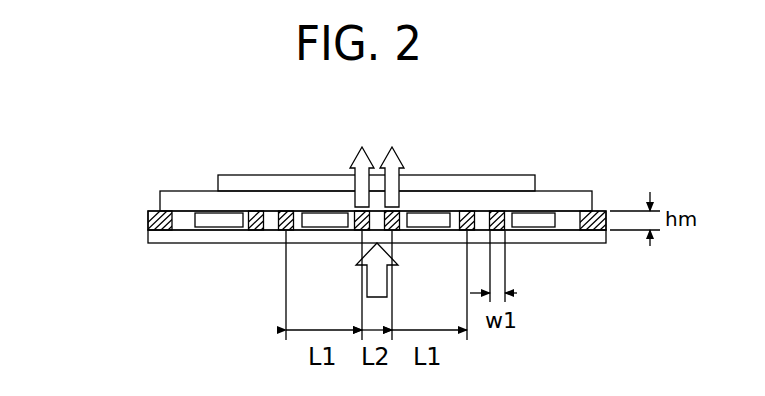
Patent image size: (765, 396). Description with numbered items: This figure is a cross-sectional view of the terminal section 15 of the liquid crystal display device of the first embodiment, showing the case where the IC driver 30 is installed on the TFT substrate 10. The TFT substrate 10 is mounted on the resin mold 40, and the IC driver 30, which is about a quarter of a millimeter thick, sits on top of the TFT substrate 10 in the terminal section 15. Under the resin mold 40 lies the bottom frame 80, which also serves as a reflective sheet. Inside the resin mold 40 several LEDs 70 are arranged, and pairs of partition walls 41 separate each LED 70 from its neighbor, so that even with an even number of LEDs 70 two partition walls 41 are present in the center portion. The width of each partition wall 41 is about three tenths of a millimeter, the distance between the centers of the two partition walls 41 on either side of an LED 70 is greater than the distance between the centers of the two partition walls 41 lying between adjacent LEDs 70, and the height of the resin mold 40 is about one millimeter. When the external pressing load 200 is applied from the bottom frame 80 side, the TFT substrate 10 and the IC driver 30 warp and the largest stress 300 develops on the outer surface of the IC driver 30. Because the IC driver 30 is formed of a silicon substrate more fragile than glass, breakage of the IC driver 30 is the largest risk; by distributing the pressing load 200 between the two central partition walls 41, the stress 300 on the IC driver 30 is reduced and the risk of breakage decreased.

The TFT substrate 10 is at (312, 195).
The terminal section 15 is at (172, 201).
The IC driver 30 is at (230, 183).
The resin mold 40 is at (148, 218).
The partition wall 41 is at (258, 231).
The LED 70 is at (208, 228).
The bottom frame 80 is at (158, 238).
The pressing load 200 is at (367, 290).
The stress 300 is at (350, 163).